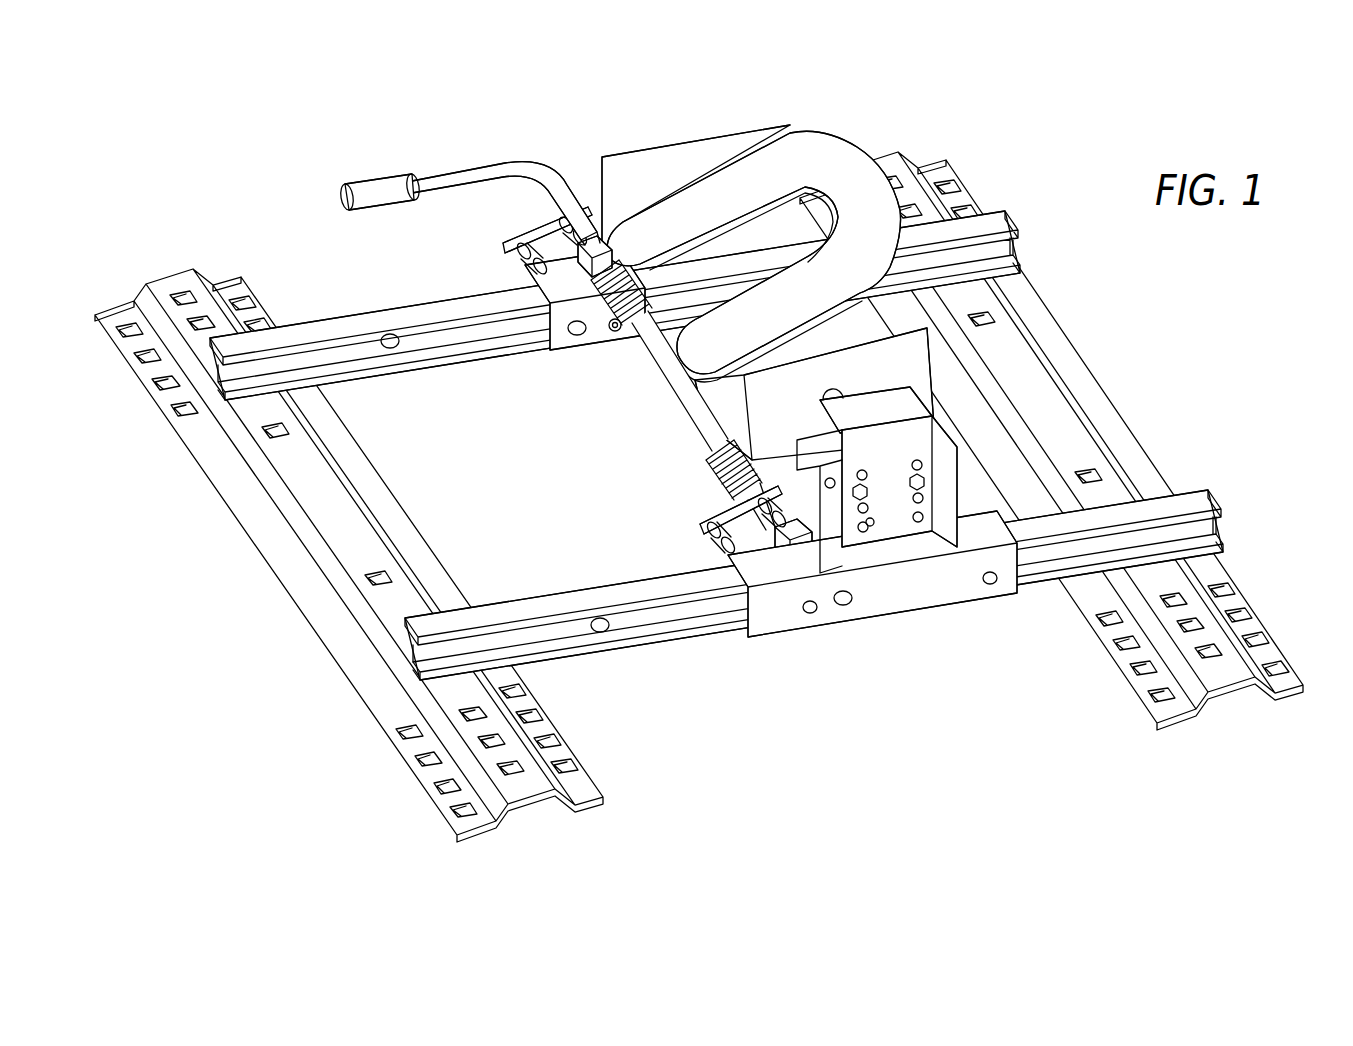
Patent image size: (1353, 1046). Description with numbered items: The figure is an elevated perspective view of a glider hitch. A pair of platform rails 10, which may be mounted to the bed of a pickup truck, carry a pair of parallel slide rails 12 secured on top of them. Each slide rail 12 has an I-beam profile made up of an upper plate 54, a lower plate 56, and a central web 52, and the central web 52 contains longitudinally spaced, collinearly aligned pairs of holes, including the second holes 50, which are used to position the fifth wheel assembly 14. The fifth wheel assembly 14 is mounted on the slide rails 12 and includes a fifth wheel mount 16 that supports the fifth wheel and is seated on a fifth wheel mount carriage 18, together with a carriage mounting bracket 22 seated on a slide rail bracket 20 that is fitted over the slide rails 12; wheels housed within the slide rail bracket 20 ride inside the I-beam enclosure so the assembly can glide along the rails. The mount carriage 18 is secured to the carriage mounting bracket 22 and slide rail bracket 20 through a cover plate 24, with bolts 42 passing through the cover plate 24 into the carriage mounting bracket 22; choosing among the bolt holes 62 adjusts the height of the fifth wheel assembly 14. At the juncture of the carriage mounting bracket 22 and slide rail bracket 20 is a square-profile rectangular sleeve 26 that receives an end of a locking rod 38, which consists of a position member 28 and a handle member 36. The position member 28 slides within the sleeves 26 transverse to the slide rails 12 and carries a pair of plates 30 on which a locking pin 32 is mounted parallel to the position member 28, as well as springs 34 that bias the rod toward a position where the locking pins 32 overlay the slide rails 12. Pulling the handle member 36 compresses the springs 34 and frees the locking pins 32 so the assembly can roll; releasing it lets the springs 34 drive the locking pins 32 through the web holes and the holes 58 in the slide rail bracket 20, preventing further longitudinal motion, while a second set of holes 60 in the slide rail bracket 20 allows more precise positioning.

The platform rails 10 is at (575, 770).
The slide rails 12 is at (440, 345).
The fifth wheel assembly 14 is at (652, 165).
The fifth wheel mount 16 is at (805, 150).
The fifth wheel mount carriage 18 is at (893, 313).
The slide rail bracket 20 is at (872, 582).
The carriage mounting bracket 22 is at (945, 490).
The cover plate 24 is at (868, 405).
The rectangular sleeve 26 is at (598, 243).
The position member 28 is at (700, 440).
The plates 30 is at (525, 246).
The locking pin 32 is at (523, 256).
The springs 34 is at (612, 332).
The handle member 36 is at (396, 176).
The locking rod 38 is at (548, 172).
The bolts 42 is at (912, 485).
The second holes 50 is at (392, 347).
The central web 52 is at (540, 642).
The upper plate 54 is at (814, 603).
The lower plate 56 is at (585, 650).
The holes 58 is at (576, 334).
The second set of holes 60 is at (848, 606).
The bolt holes 62 is at (878, 522).